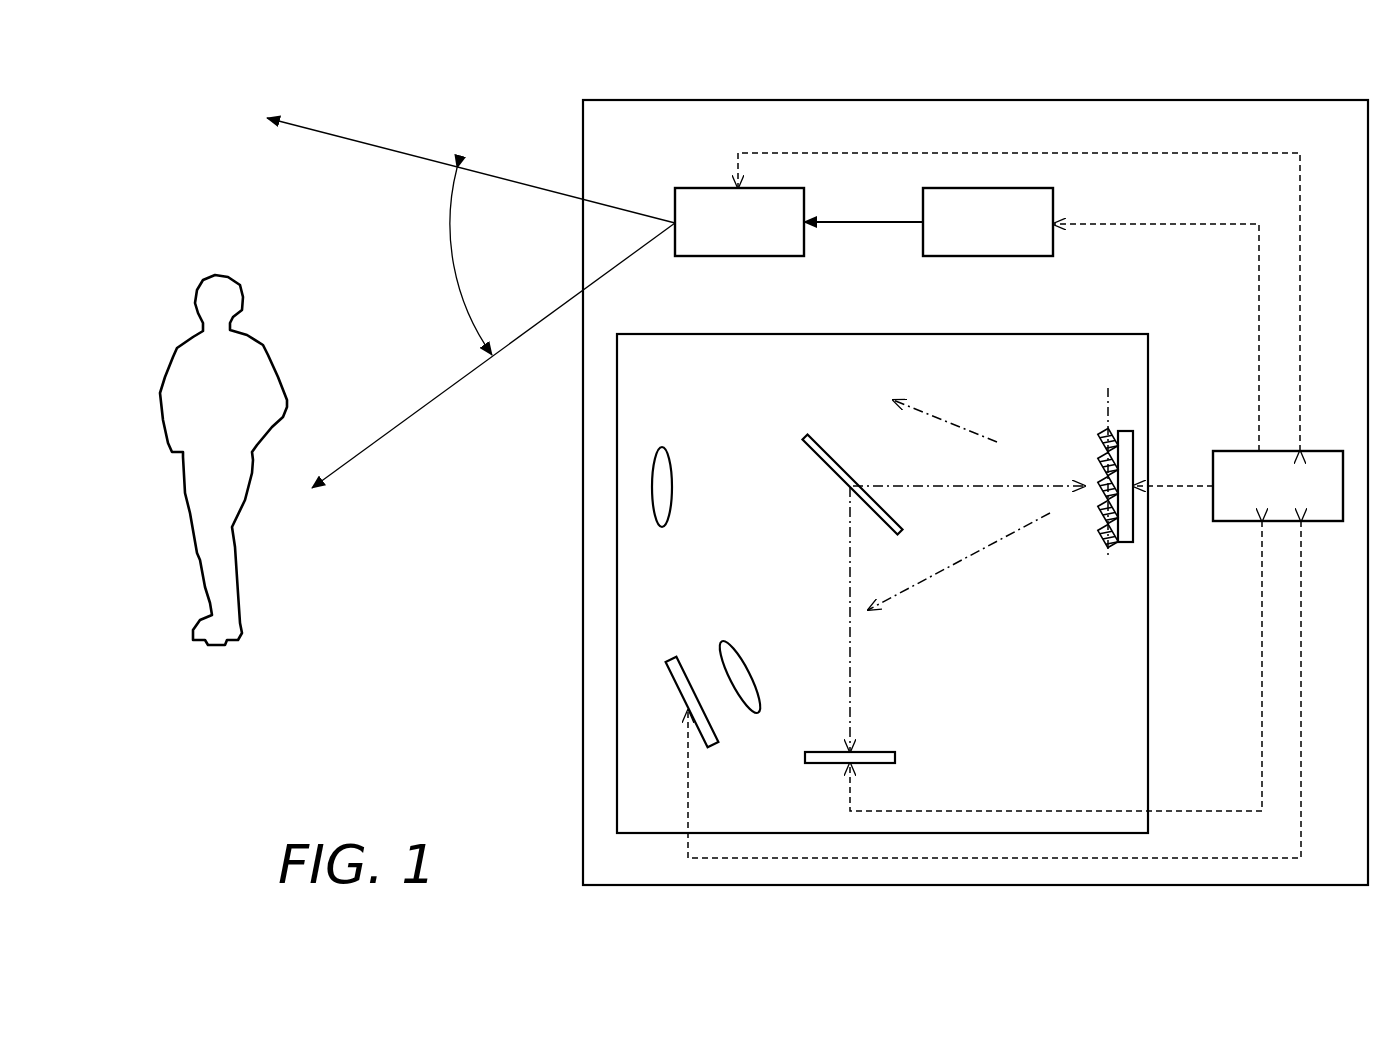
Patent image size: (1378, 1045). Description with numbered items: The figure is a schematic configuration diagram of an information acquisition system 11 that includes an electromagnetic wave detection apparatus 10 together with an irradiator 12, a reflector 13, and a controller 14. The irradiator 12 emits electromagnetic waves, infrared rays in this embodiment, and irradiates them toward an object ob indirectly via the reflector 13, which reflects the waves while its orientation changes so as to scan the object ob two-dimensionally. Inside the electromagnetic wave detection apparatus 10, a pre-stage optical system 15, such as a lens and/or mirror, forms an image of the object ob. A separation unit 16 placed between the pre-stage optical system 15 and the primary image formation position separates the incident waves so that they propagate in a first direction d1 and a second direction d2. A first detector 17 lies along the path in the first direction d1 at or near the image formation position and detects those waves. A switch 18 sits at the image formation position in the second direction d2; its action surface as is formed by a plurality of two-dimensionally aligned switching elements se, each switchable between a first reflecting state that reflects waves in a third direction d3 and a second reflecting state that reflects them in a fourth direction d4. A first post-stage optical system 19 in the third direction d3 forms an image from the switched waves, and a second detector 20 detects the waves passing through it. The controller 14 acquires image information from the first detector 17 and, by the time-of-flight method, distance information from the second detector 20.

The information acquisition system 11 is at (583, 116).
The electromagnetic wave detection apparatus 10 is at (815, 333).
The irradiator 12 is at (992, 257).
The reflector 13 is at (738, 257).
The controller 14 is at (1233, 522).
The pre-stage optical system 15 is at (672, 453).
The separation unit 16 is at (820, 447).
The first detector 17 is at (895, 757).
The switch 18 is at (1125, 543).
The first post-stage optical system 19 is at (722, 643).
The second detector 20 is at (713, 744).
The object ob is at (265, 370).
The action surface as is at (1106, 396).
The switching element se is at (1100, 478).
The first direction d1 is at (852, 676).
The second direction d2 is at (927, 485).
The third direction d3 is at (960, 562).
The fourth direction d4 is at (947, 420).